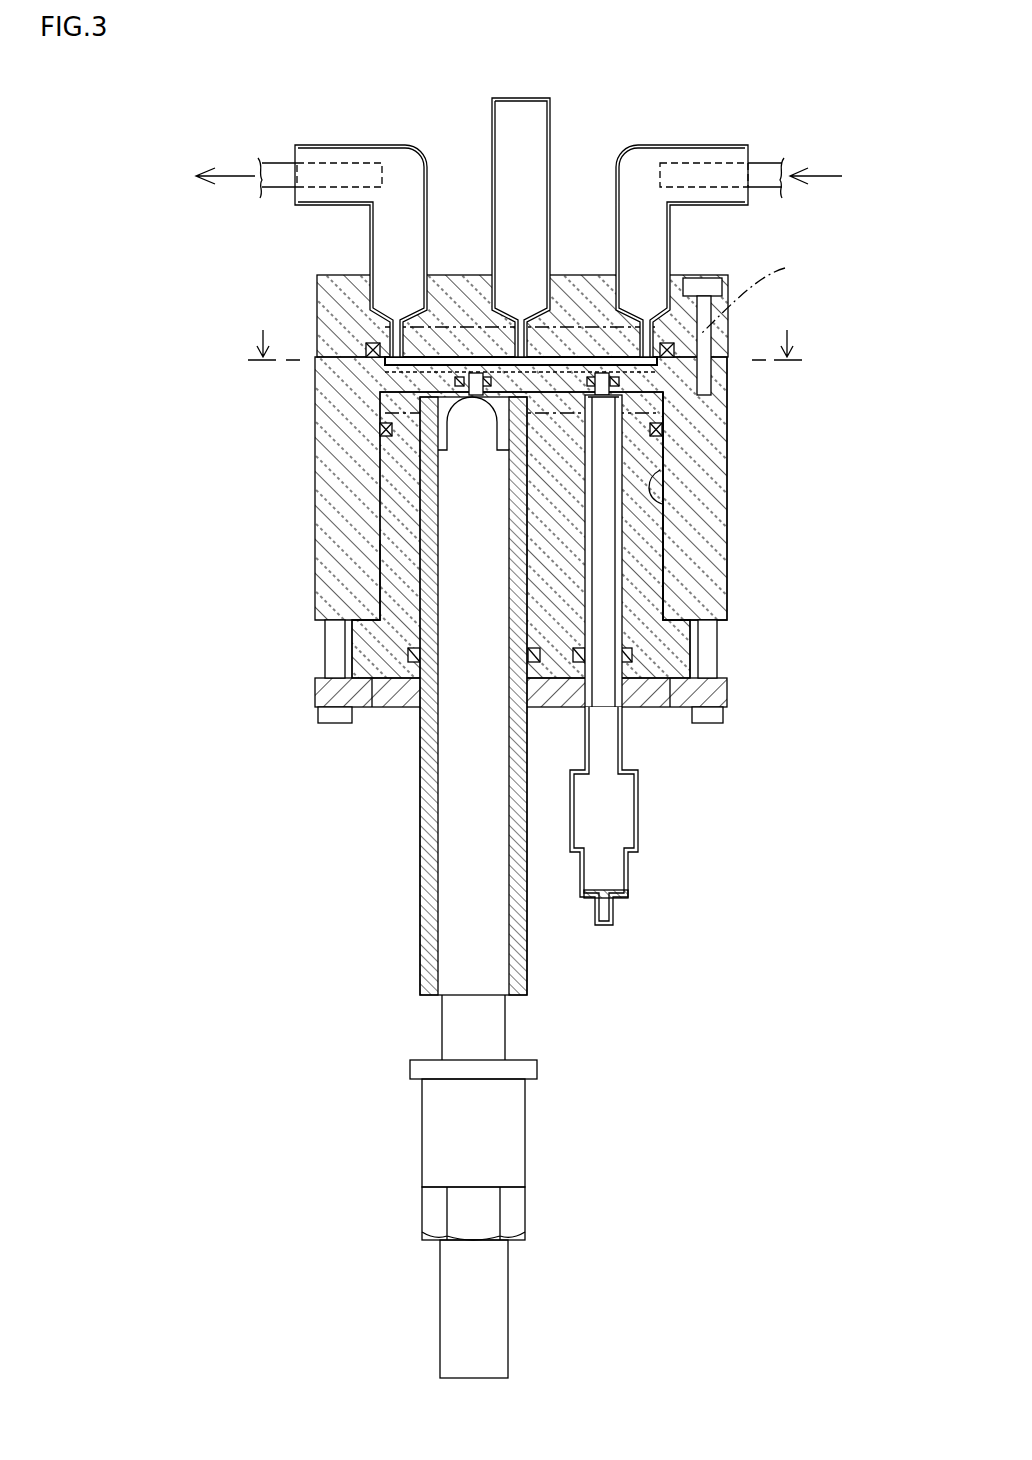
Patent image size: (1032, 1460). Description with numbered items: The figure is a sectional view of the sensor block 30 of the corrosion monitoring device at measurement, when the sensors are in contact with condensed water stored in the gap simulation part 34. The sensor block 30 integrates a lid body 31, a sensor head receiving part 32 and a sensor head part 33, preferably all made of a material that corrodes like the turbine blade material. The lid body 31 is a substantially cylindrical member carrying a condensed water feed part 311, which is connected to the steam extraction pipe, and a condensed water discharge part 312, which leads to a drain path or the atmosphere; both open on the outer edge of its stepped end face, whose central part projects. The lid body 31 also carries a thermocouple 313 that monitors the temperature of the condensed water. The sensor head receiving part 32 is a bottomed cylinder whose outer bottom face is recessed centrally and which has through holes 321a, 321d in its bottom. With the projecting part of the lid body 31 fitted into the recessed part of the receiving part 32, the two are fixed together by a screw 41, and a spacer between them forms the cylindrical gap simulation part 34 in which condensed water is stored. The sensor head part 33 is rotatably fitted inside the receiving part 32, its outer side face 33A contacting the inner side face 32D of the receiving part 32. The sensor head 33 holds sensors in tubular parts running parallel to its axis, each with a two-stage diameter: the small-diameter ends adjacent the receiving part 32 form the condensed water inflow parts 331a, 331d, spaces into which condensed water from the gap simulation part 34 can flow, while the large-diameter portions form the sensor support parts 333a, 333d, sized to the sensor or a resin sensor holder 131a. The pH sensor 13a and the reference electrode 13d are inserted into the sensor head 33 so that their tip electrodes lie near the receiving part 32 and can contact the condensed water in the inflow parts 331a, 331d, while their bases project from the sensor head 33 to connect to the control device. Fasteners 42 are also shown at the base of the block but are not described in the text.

The sensor block 30 is at (828, 82).
The lid body 31 is at (572, 282).
The condensed water feed part 311 is at (656, 143).
The condensed water discharge part 312 is at (345, 143).
The thermocouple 313 is at (550, 115).
The sensor head receiving part 32 is at (708, 424).
The through hole 321a is at (390, 370).
The through hole 321d is at (700, 385).
The inner side face 32D is at (725, 515).
The sensor head part 33 is at (678, 637).
The outer side face 33A is at (658, 500).
The condensed water inflow part 331a is at (455, 400).
The condensed water inflow part 331d is at (610, 398).
The sensor support part 333a is at (400, 567).
The sensor support part 333d is at (625, 568).
The gap simulation part 34 is at (456, 362).
The screw 41 is at (702, 284).
The bolt 42 is at (336, 718).
The pH sensor 13a is at (417, 887).
The sensor holder 131a is at (432, 830).
The reference electrode 13d is at (628, 876).